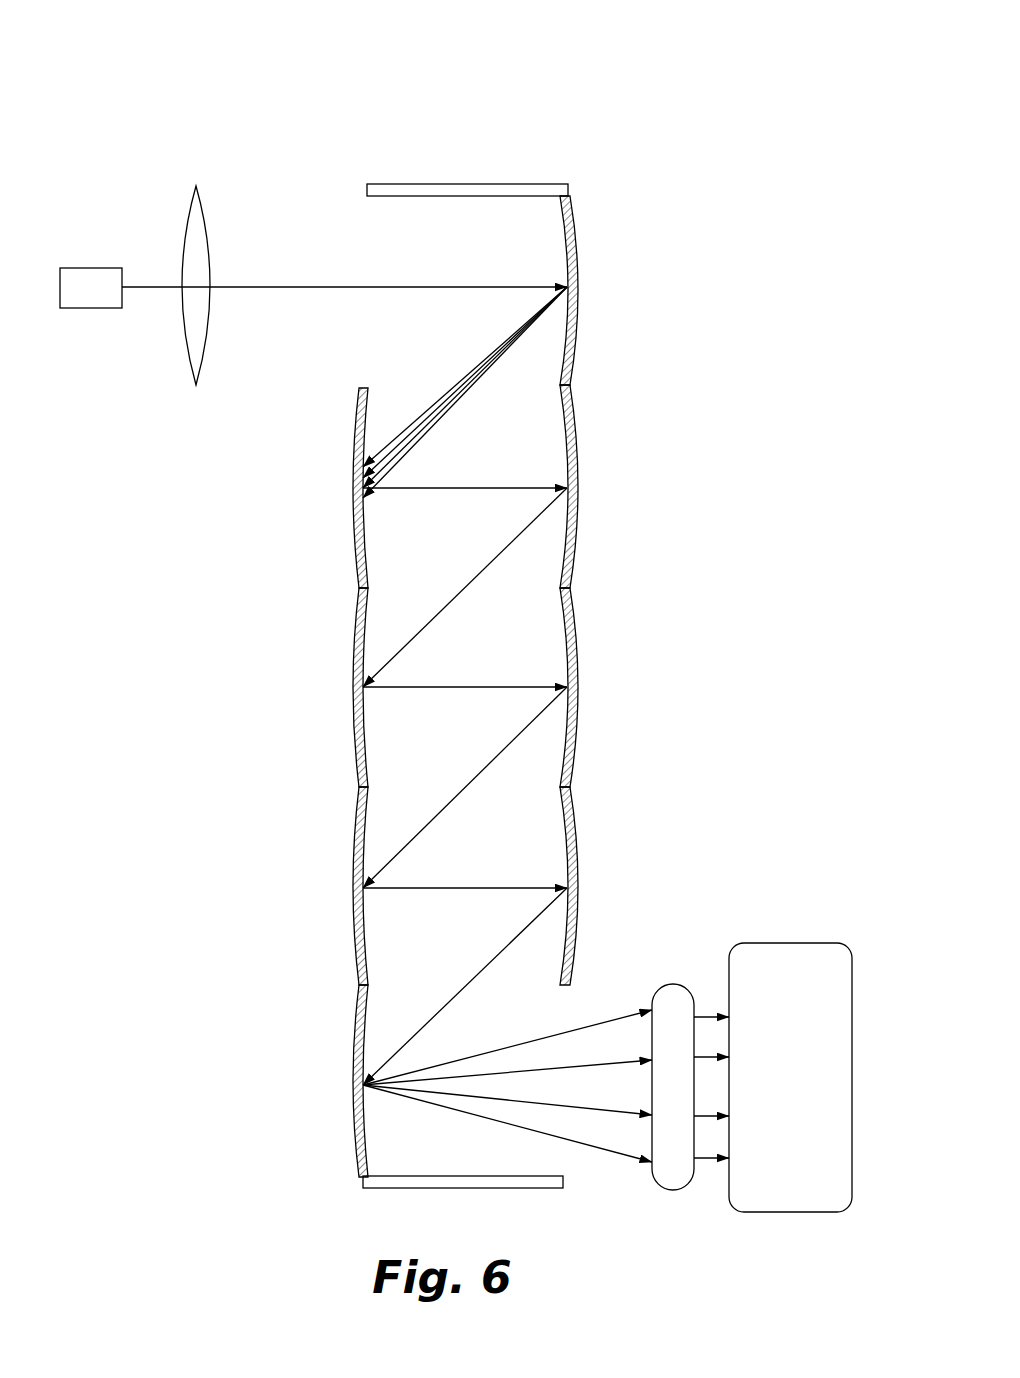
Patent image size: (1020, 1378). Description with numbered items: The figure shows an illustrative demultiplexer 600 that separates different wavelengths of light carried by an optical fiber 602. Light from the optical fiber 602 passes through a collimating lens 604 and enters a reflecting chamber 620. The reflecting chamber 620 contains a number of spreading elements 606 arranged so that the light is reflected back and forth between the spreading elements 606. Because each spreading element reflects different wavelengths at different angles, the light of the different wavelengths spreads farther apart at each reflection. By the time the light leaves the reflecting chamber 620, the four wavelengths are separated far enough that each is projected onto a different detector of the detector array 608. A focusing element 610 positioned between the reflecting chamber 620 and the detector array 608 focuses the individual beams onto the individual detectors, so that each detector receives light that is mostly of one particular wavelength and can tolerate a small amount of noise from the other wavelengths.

The demultiplexer 600 is at (222, 138).
The optical fiber 602 is at (97, 268).
The collimating lens 604 is at (192, 384).
The spreading elements 606 is at (578, 325).
The detector array 608 is at (773, 1077).
The focusing element 610 is at (675, 982).
The reflecting chamber 620 is at (478, 184).